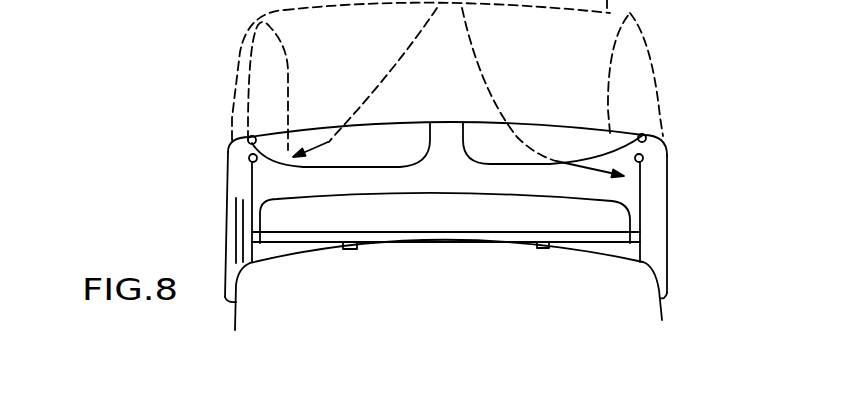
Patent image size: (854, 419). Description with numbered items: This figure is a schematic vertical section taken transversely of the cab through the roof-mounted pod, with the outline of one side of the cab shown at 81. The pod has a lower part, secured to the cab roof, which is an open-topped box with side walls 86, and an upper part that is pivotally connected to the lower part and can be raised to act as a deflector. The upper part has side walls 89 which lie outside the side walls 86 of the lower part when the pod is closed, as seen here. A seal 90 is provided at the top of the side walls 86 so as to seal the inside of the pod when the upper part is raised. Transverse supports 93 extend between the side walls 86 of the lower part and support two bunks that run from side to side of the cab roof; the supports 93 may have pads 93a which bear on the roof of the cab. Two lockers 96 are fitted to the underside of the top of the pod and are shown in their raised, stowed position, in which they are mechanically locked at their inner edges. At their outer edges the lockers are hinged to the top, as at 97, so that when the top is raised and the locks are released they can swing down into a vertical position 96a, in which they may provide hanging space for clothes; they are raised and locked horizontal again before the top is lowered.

The outline of one side of a cab 81 is at (668, 282).
The side walls 86 is at (250, 257).
The side walls 89 is at (226, 210).
The seal 90 is at (249, 158).
The transverse supports 93 is at (596, 237).
The pads 93a is at (345, 248).
The lockers 96 is at (389, 161).
The vertical position 96a is at (297, 111).
The hinge 97 is at (248, 140).